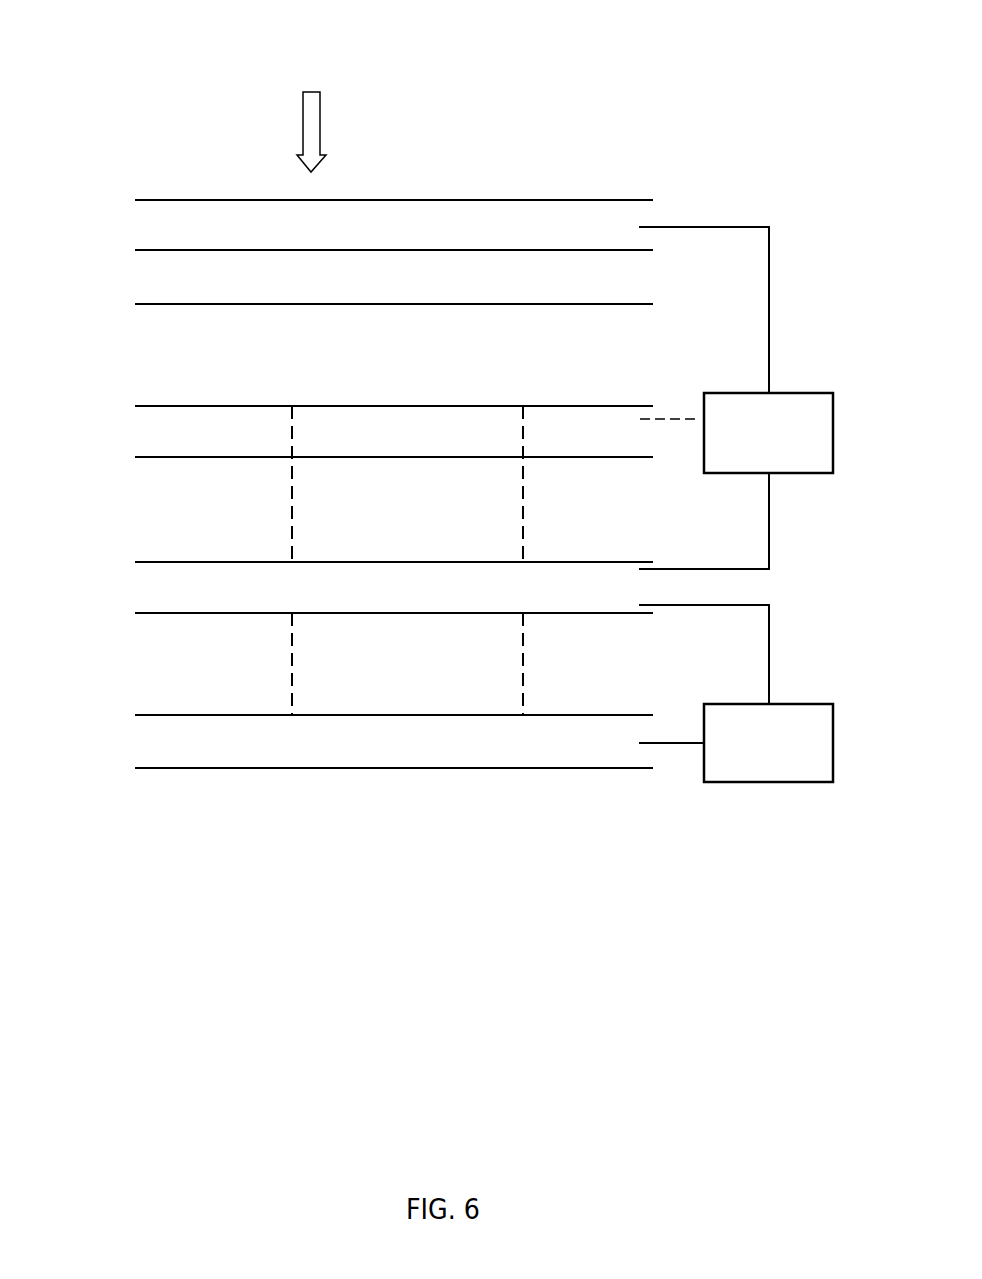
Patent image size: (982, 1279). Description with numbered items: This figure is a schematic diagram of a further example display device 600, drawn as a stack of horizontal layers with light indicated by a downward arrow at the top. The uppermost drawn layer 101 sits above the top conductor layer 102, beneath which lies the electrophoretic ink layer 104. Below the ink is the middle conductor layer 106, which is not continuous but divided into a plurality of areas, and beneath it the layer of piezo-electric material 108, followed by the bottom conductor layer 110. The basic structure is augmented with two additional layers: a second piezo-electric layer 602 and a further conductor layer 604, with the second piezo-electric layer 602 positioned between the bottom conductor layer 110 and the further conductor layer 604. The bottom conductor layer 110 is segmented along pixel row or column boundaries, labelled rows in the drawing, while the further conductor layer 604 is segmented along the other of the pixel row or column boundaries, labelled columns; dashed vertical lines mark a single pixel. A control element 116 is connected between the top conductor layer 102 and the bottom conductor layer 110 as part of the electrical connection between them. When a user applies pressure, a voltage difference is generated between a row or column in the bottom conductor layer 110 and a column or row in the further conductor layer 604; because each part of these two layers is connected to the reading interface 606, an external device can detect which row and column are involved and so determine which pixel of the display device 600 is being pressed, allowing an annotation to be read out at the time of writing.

The display device 600 is at (637, 89).
The top layer 101 is at (149, 228).
The top conductor layer 102 is at (149, 276).
The electrophoretic ink layer 104 is at (149, 355).
The middle conductor layer 106 is at (149, 431).
The layer of piezo-electric material 108 is at (149, 508).
The bottom conductor layer 110 is at (149, 586).
The second piezo-electric layer 602 is at (149, 663).
The further conductor layer 604 is at (149, 741).
The control element 116 is at (736, 398).
The reading interface 606 is at (770, 782).